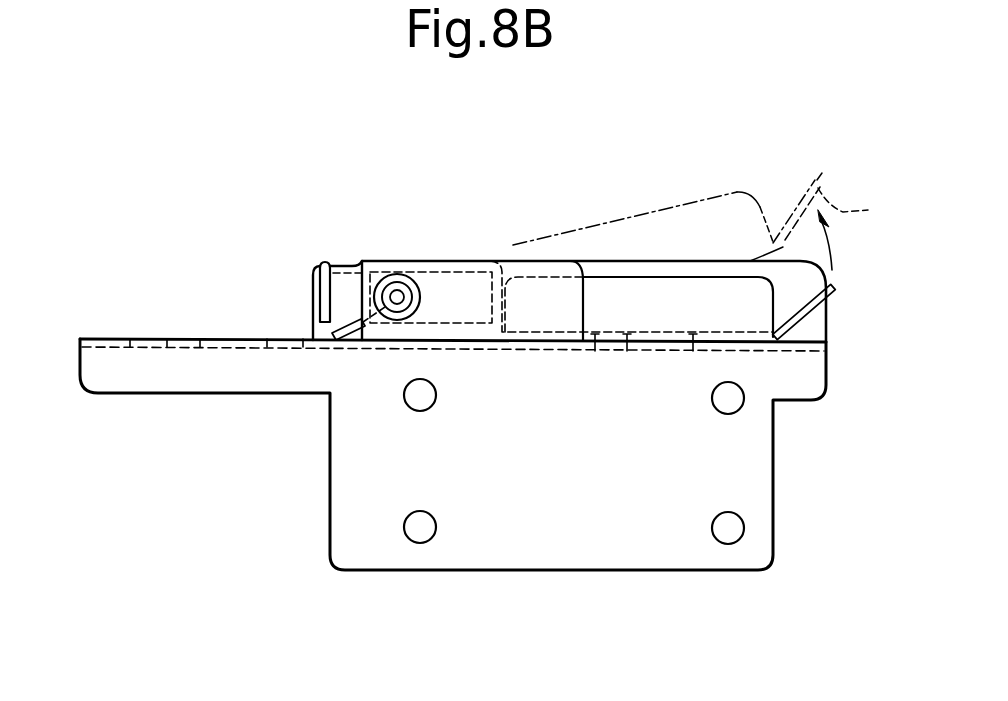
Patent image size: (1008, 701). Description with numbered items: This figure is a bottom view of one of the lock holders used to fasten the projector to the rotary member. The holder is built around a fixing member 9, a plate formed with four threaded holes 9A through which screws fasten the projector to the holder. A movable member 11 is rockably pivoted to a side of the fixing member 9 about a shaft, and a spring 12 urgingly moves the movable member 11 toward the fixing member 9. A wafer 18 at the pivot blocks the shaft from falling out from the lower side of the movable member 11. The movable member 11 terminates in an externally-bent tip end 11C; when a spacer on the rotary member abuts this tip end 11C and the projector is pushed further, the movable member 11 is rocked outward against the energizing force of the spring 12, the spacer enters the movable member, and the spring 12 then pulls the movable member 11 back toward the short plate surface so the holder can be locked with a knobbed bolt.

The fixing member 9 is at (774, 505).
The threaded holes 9A is at (430, 407).
The movable member 11 is at (834, 284).
The externally-bent tip end 11C is at (834, 293).
The spring 12 is at (368, 312).
The wafer 18 is at (398, 275).